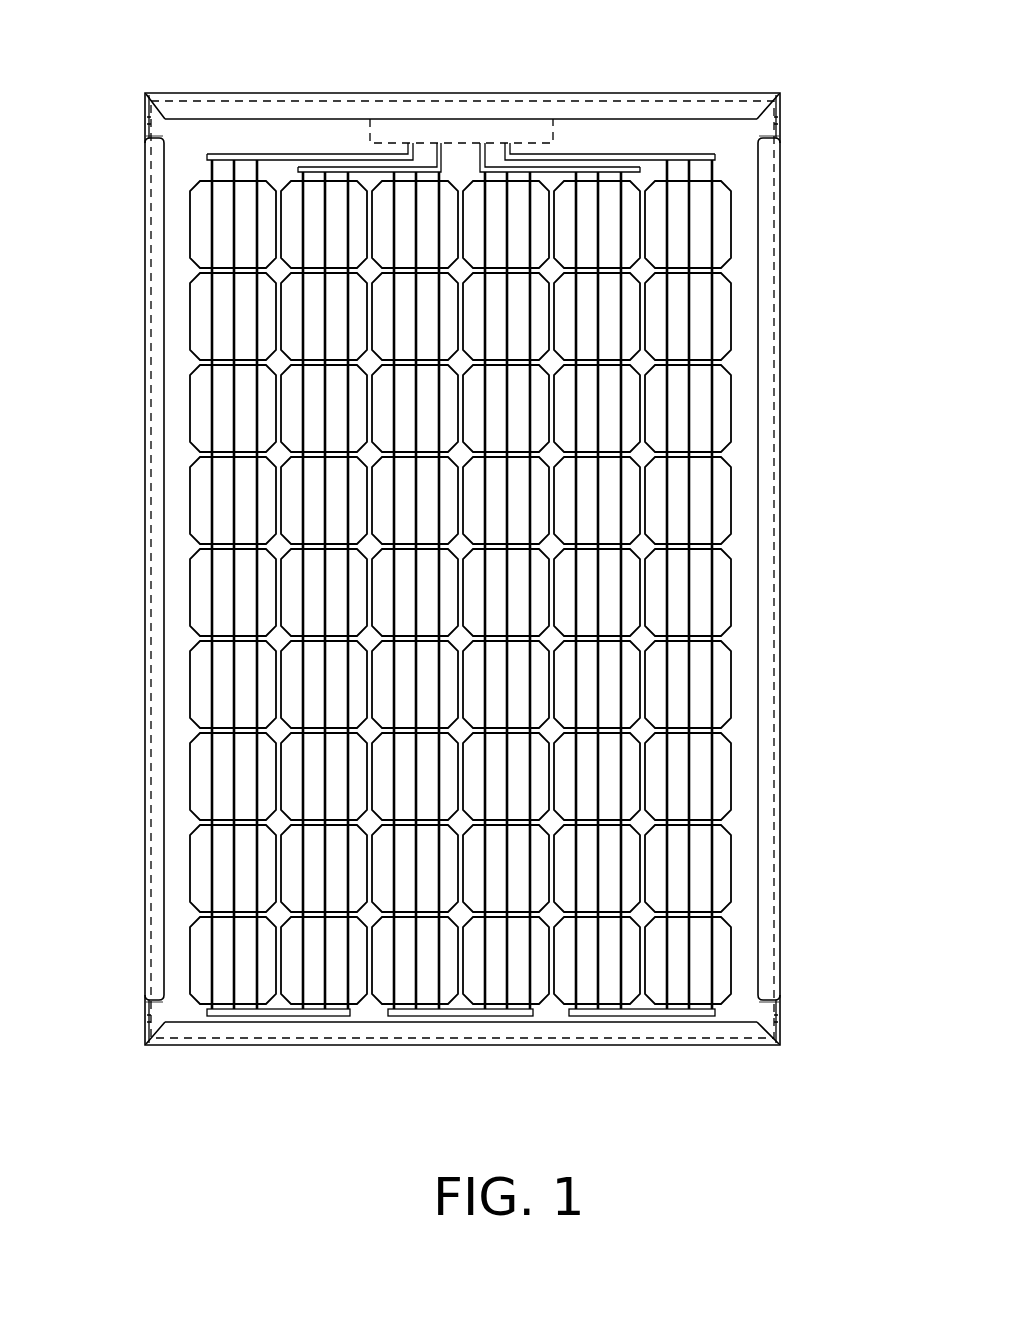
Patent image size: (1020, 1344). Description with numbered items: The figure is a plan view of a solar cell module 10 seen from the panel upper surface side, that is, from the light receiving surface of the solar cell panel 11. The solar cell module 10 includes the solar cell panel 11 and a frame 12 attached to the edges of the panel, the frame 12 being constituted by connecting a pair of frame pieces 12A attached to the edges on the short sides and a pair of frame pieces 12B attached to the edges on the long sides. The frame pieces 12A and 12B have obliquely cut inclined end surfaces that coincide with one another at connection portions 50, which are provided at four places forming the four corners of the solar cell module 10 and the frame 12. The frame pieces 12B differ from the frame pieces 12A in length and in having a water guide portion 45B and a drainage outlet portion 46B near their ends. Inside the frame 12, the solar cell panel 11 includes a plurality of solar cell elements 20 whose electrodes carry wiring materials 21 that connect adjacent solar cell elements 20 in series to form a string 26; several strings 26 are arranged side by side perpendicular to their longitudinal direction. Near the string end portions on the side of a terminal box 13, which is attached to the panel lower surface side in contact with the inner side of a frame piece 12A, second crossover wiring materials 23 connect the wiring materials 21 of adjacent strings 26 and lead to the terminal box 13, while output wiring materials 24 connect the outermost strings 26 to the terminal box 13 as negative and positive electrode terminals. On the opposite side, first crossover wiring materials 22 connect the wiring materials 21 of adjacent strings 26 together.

The solar cell module 10 is at (740, 41).
The solar cell panel 11 is at (742, 330).
The frame 12 is at (768, 389).
The frame piece 12A is at (325, 104).
The frame piece 12B is at (152, 884).
The terminal box 13 is at (440, 130).
The solar cell element 20 is at (727, 483).
The wiring material 21 is at (712, 527).
The first crossover wiring material 22 is at (337, 1013).
The second crossover wiring material 23 is at (497, 166).
The output wiring material 24 is at (655, 160).
The string 26 is at (735, 670).
The water guide portion 45B is at (146, 117).
The drainage outlet portion 46B is at (143, 136).
The connection portion 50 is at (146, 94).